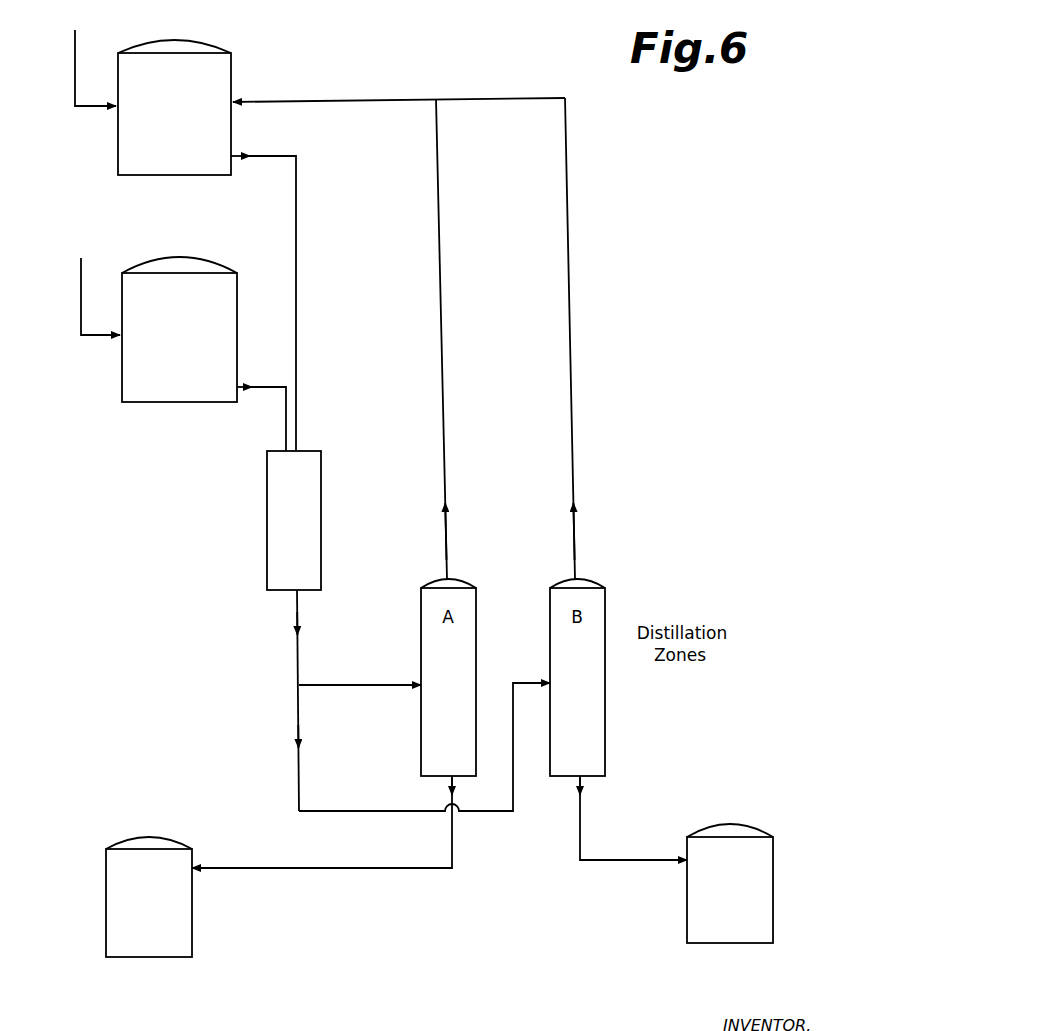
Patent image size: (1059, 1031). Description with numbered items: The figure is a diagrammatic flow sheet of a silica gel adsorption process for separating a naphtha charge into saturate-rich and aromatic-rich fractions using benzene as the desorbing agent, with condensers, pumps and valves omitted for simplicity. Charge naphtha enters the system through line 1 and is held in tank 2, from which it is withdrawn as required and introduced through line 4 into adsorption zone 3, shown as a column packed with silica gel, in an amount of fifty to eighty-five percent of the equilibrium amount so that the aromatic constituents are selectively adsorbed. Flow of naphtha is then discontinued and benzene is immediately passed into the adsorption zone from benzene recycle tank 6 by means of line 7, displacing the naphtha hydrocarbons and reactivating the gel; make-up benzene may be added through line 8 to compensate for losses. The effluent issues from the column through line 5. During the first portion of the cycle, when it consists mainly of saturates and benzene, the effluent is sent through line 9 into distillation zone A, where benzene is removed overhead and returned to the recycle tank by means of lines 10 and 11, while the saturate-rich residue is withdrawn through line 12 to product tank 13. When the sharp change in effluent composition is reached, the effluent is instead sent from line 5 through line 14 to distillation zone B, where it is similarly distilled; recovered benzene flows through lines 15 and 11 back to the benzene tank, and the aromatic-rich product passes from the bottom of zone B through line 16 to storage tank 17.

The line 1 is at (80, 286).
The tank 2 is at (228, 288).
The adsorption zone 3 is at (274, 560).
The line 4 is at (265, 385).
The line 5 is at (296, 645).
The benzene recycle tank 6 is at (224, 66).
The line 7 is at (264, 157).
The line 8 is at (73, 57).
The line 9 is at (335, 683).
The line 10 is at (444, 403).
The line 11 is at (363, 98).
The line 12 is at (382, 870).
The product tank 13 is at (111, 905).
The line 14 is at (354, 810).
The line 15 is at (572, 378).
The line 16 is at (579, 838).
The storage tank 17 is at (768, 883).